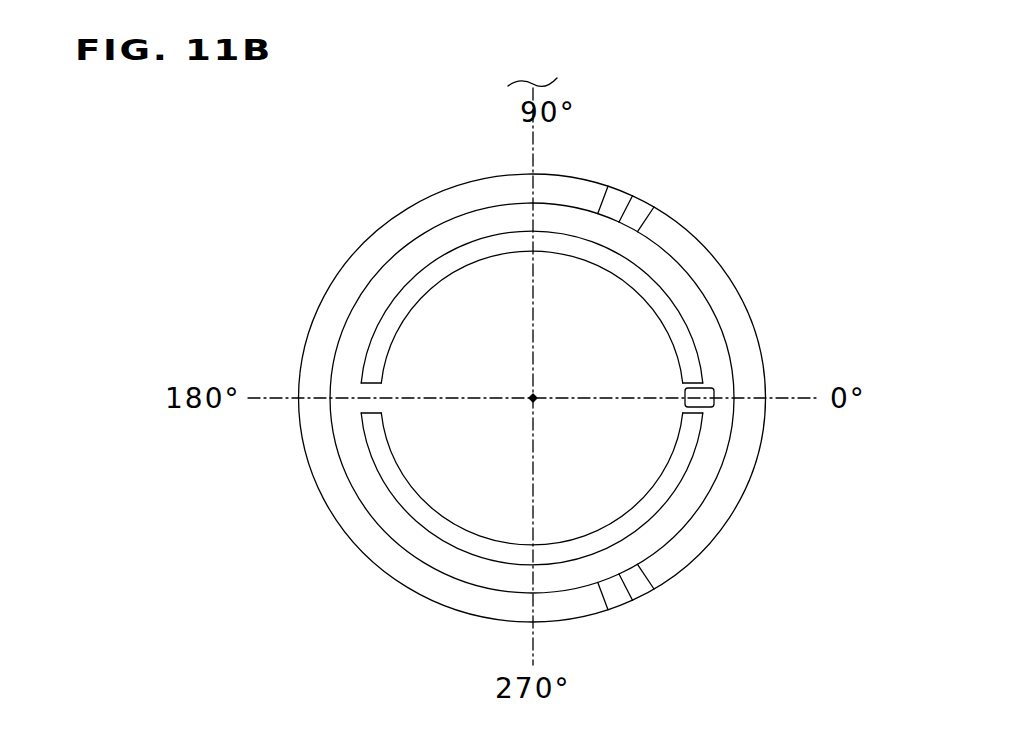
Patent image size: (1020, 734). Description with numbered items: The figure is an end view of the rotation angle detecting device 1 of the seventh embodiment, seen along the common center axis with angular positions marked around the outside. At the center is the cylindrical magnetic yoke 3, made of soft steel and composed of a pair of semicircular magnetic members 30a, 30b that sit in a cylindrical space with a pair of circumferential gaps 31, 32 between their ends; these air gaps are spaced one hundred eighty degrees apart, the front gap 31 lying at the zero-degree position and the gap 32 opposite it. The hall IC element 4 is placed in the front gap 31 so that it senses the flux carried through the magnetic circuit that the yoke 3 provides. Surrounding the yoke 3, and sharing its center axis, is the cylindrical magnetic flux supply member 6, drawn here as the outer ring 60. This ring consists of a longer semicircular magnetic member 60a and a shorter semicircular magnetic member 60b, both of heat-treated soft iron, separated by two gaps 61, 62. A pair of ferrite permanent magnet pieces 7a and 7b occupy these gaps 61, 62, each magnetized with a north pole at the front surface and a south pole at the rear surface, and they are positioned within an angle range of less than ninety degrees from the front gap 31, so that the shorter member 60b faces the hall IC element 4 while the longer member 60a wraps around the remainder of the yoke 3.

The rotation angle detecting device 1 is at (661, 131).
The cylindrical magnetic yoke 3 is at (458, 258).
The semicircular magnetic member 30a is at (640, 282).
The semicircular magnetic member 30b is at (647, 507).
The front circumferential gap 31 is at (693, 410).
The circumferential gap 32 is at (370, 405).
The hall IC element 4 is at (710, 388).
The cylindrical magnetic flux supply member 6 is at (363, 220).
The magnet holder ring 60 is at (313, 355).
The longer semicircular magnetic member 60a is at (340, 297).
The shorter semicircular magnetic member 60b is at (722, 295).
The gap 61 is at (640, 195).
The gap 62 is at (640, 584).
The permanent magnet piece 7a is at (621, 189).
The permanent magnet piece 7b is at (622, 606).